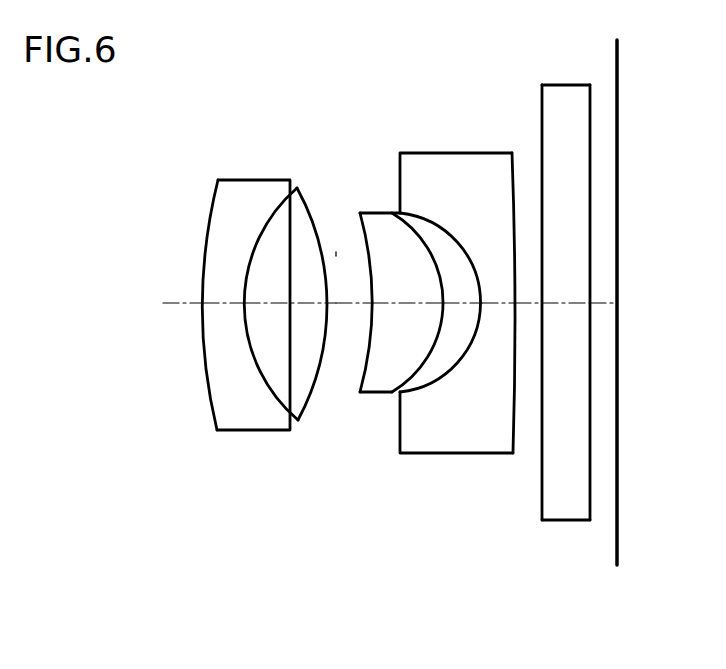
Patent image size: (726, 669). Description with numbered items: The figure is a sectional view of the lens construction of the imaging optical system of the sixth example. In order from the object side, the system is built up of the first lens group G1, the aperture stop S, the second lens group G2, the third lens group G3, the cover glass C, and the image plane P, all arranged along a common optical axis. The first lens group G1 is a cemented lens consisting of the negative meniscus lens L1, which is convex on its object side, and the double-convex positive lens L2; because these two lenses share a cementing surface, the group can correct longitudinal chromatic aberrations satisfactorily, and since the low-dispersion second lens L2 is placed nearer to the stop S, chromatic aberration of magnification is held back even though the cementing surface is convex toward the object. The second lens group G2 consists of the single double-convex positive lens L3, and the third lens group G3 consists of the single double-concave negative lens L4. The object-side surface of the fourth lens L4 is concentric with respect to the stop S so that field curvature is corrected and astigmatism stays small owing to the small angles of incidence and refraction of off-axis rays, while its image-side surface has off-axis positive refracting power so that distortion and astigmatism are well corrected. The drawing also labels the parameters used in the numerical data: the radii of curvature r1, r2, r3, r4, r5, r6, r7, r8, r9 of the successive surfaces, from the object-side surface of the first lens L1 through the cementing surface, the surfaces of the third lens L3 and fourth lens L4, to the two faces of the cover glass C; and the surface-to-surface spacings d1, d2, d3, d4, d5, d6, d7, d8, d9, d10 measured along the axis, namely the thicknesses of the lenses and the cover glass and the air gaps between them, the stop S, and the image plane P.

The first lens group G1 is at (197, 58).
The second lens group G2 is at (350, 58).
The third lens group G3 is at (400, 58).
The first lens L1 is at (238, 200).
The second lens L2 is at (298, 218).
The third lens L3 is at (380, 228).
The fourth lens L4 is at (467, 170).
The aperture stop S is at (338, 250).
The cover glass C is at (567, 107).
The image plane P is at (619, 150).
The radius of curvature of lens surface r1 is at (207, 227).
The radius of curvature of lens surface r2 is at (262, 233).
The radius of curvature of lens surface r3 is at (320, 233).
The radius of curvature of lens surface r4 is at (362, 245).
The radius of curvature of lens surface r5 is at (383, 228).
The radius of curvature of lens surface r6 is at (430, 225).
The radius of curvature of lens surface r7 is at (513, 183).
The radius of curvature of lens surface r8 is at (540, 117).
The radius of curvature of lens surface r9 is at (592, 110).
The lens surface-to-lens surface spacing d1 is at (223, 319).
The lens surface-to-lens surface spacing d2 is at (285, 319).
The lens surface-to-lens surface spacing d3 is at (335, 305).
The lens surface-to-lens surface spacing d4 is at (354, 319).
The lens surface-to-lens surface spacing d5 is at (407, 319).
The lens surface-to-lens surface spacing d6 is at (462, 319).
The lens surface-to-lens surface spacing d7 is at (498, 319).
The lens surface-to-lens surface spacing d8 is at (530, 305).
The lens surface-to-lens surface spacing d9 is at (566, 319).
The lens surface-to-lens surface spacing d10 is at (605, 305).